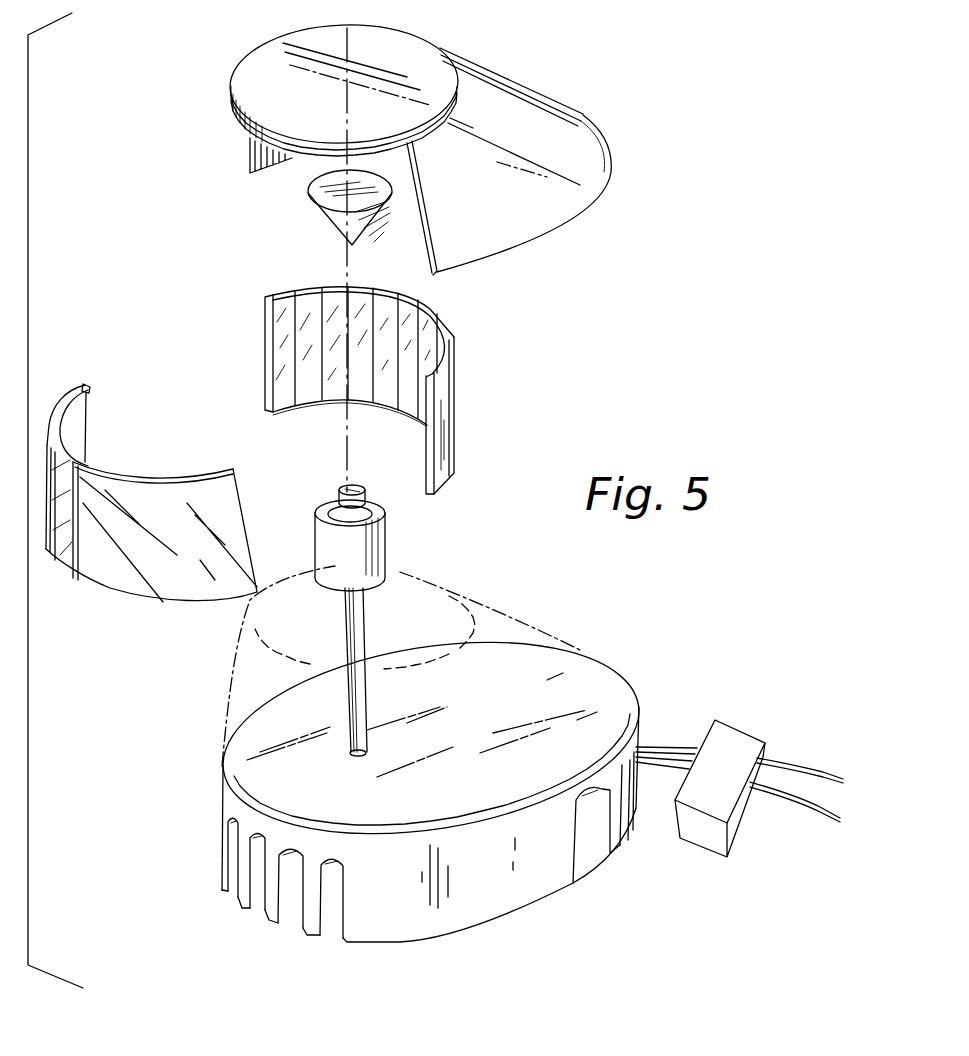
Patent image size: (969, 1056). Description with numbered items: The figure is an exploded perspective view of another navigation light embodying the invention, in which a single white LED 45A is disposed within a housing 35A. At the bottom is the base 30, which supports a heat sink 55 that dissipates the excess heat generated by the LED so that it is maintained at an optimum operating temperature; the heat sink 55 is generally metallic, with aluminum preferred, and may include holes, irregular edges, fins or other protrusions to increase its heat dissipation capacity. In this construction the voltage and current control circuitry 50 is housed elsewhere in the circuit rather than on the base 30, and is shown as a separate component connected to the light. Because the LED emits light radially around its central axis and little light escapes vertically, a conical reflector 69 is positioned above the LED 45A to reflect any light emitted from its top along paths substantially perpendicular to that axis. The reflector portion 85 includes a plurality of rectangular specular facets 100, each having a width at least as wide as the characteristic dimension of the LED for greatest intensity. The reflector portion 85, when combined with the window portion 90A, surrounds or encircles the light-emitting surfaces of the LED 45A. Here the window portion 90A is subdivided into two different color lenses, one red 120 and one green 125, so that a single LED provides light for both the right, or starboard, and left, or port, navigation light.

The base 30 is at (480, 910).
The housing 35A is at (568, 207).
The single white LED 45A is at (333, 507).
The voltage and current control circuitry 50 is at (728, 733).
The heat sink 55 is at (360, 543).
The conical reflector 69 is at (333, 222).
The reflector portion 85 is at (454, 378).
The window portion 90A is at (141, 480).
The specular facets 100 is at (337, 300).
The red lens 120 is at (122, 583).
The green lens 125 is at (72, 418).